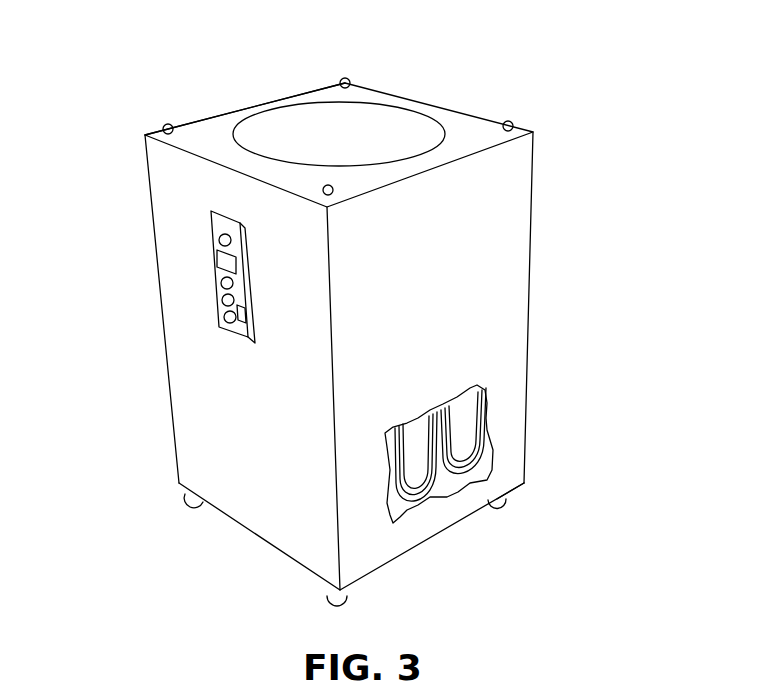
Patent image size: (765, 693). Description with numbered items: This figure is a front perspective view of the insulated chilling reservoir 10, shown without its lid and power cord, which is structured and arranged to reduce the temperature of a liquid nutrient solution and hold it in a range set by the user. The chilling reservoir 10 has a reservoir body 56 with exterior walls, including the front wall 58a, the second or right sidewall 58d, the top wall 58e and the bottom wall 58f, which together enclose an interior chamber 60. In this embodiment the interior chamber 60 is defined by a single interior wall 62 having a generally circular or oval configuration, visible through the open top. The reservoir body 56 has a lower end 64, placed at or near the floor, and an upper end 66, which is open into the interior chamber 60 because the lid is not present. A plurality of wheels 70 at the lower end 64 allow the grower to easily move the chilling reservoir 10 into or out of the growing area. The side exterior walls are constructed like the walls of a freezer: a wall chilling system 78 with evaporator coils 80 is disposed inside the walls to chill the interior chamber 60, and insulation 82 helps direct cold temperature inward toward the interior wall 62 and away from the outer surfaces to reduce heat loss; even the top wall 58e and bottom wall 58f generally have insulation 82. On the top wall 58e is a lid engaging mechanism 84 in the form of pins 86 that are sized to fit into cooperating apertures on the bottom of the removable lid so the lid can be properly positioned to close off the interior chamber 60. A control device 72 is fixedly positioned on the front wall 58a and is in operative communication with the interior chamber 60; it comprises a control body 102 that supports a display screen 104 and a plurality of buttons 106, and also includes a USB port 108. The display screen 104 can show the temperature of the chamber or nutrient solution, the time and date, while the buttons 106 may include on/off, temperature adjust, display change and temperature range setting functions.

The chilling reservoir 10 is at (531, 92).
The reservoir body 56 is at (502, 267).
The front wall 58a is at (176, 198).
The second or right sidewall 58d is at (502, 208).
The top wall 58e is at (206, 130).
The bottom wall 58f is at (230, 530).
The interior chamber 60 is at (392, 112).
The interior wall 62 is at (320, 130).
The lower end 64 is at (540, 480).
The upper end 66 is at (555, 130).
The wheels 70 is at (509, 506).
The control device 72 is at (212, 347).
The wall chilling system 78 is at (492, 431).
The evaporator coils 80 is at (422, 495).
The insulation 82 is at (492, 441).
The lid engaging mechanism 84 is at (354, 76).
The pins 86 is at (164, 125).
The control body 102 is at (217, 313).
The display screen 104 is at (217, 258).
The buttons 106 is at (219, 286).
The USB port 108 is at (255, 345).